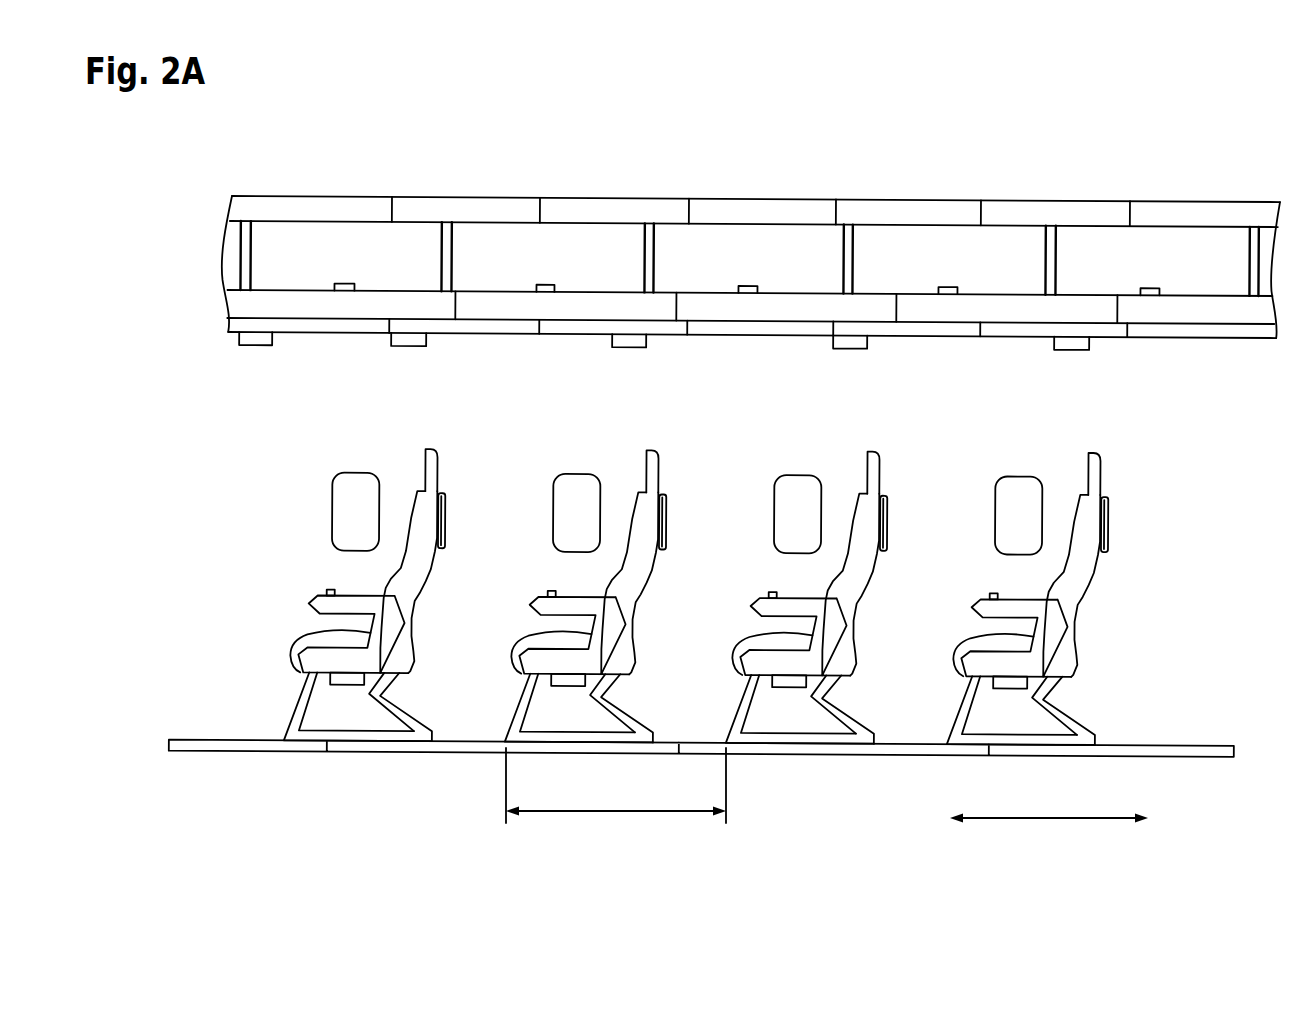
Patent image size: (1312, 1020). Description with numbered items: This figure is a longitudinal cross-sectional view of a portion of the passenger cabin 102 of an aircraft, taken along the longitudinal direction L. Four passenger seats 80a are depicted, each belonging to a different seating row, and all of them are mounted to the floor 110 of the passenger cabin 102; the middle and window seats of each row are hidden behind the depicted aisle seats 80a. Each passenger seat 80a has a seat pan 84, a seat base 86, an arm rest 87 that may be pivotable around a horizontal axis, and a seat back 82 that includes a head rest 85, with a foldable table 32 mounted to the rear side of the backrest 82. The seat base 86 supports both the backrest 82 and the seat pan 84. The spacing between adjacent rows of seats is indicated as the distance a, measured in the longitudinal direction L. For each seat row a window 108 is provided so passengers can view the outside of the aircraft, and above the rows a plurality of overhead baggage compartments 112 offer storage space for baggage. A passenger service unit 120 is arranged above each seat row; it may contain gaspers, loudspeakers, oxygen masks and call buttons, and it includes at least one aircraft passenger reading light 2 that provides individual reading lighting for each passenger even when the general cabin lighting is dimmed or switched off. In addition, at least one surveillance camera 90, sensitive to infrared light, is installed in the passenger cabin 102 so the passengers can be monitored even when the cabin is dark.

The overhead baggage compartment 112 is at (375, 243).
The passenger service unit 120 is at (403, 357).
The surveillance camera 90 is at (240, 336).
The aircraft passenger reading light 2 is at (391, 338).
The passenger seat 80a is at (434, 436).
The head rest 85 is at (436, 461).
The seat back 82 is at (423, 555).
The foldable table 32 is at (461, 482).
The window 108 is at (342, 495).
The arm rest 87 is at (358, 603).
The seat pan 84 is at (305, 641).
The seat base 86 is at (405, 711).
The passenger cabin 102 is at (214, 597).
The floor 110 is at (1185, 744).
The distance between adjacent rows a is at (616, 785).
The longitudinal direction L is at (1050, 820).